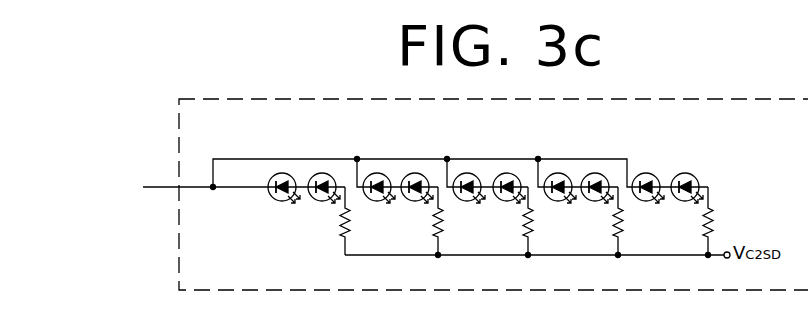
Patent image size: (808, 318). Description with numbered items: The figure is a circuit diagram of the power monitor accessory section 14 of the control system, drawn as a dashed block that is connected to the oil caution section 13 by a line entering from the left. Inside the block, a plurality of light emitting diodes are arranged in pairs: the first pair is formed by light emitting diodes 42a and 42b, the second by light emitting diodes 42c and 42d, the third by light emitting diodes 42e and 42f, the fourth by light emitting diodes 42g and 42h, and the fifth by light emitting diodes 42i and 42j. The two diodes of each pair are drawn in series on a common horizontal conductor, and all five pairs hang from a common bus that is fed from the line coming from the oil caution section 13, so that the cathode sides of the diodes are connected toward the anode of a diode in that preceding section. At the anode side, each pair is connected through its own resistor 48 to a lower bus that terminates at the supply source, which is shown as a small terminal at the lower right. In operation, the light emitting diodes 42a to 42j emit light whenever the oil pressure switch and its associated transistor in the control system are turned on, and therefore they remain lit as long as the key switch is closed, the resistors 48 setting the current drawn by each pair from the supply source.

The oil caution section 13 is at (143, 187).
The power monitor accessory section 14 is at (725, 100).
The light emitting diode 42a is at (278, 201).
The light emitting diode 42b is at (320, 201).
The light emitting diode 42c is at (375, 173).
The light emitting diode 42d is at (414, 173).
The light emitting diode 42e is at (465, 201).
The light emitting diode 42f is at (506, 173).
The light emitting diode 42g is at (557, 201).
The light emitting diode 42h is at (596, 173).
The light emitting diode 42i is at (648, 173).
The light emitting diode 42j is at (689, 173).
The resistor 48 is at (544, 221).